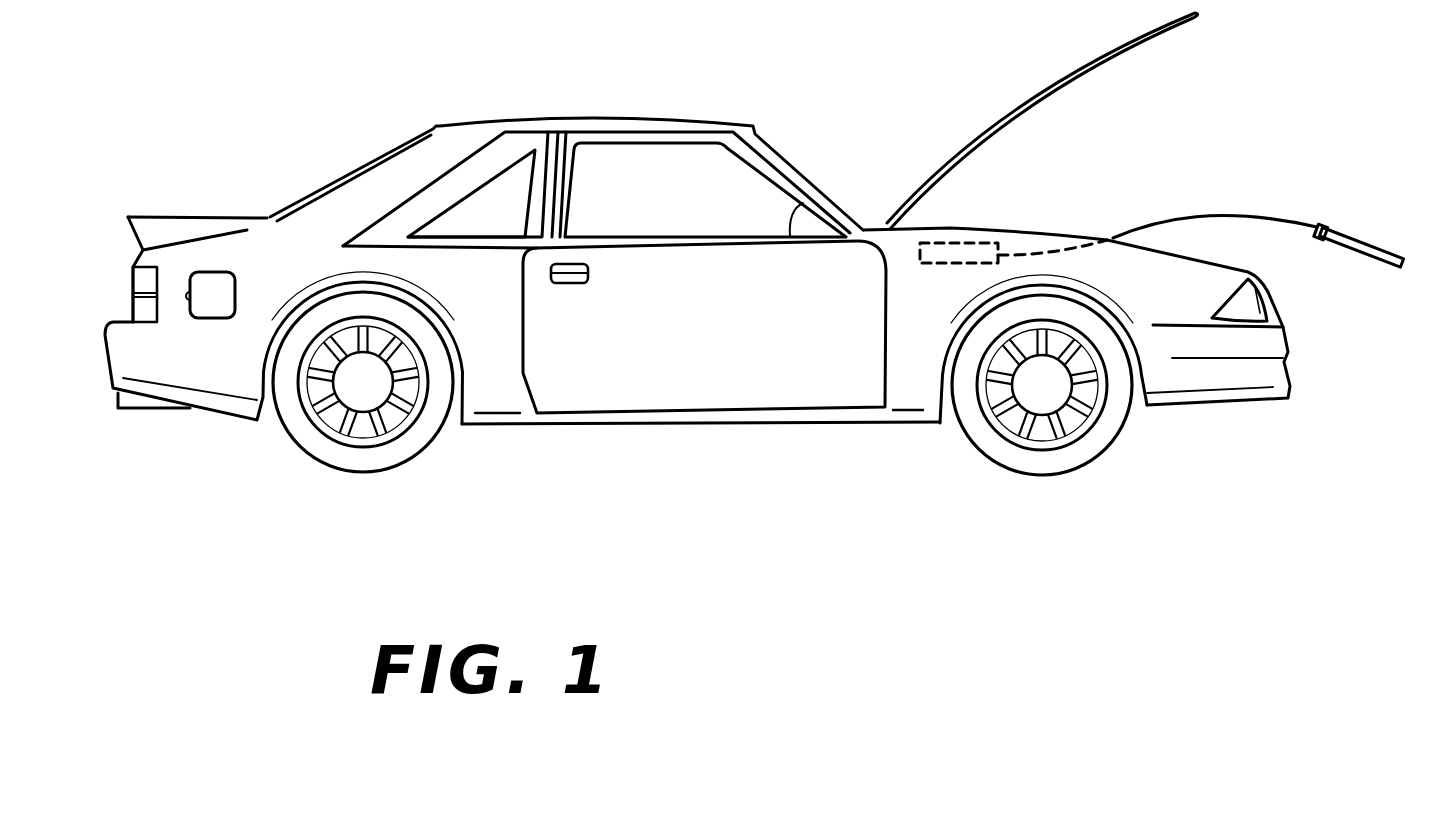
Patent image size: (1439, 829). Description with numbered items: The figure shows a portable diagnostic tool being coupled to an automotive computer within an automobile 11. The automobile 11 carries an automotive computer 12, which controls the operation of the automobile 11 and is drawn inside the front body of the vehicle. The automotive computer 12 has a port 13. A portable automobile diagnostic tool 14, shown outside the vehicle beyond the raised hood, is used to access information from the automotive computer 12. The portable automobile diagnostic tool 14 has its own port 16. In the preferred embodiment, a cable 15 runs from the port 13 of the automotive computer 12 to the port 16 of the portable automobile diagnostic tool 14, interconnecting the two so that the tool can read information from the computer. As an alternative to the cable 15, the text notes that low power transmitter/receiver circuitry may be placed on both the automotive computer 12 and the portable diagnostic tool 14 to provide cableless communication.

The automobile 11 is at (629, 119).
The automotive computer 12 is at (1008, 247).
The port 13 is at (966, 243).
The portable automobile diagnostic tool 14 is at (1382, 247).
The cable 15 is at (1210, 213).
The port 16 is at (1318, 223).